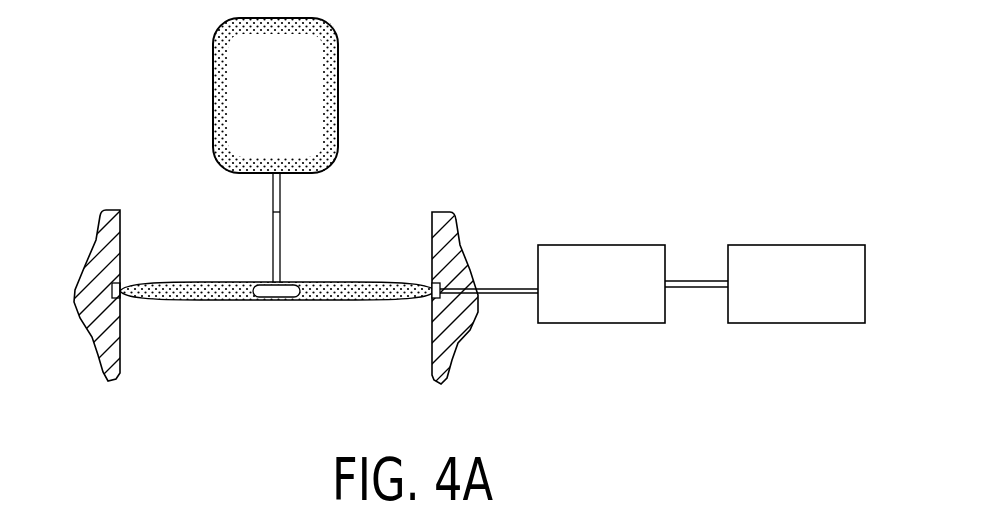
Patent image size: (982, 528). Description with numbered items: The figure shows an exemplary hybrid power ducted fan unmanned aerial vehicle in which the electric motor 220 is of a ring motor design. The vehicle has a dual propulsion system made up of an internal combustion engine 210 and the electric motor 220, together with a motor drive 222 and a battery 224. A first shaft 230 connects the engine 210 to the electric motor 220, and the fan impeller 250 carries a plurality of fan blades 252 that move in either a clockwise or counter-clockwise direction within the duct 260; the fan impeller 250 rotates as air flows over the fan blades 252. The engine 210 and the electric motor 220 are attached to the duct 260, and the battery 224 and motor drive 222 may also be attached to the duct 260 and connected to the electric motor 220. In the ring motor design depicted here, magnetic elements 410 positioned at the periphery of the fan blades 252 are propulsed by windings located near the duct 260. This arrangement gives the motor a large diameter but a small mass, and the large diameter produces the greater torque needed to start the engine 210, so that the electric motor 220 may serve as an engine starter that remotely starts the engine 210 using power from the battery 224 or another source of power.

The internal combustion engine 210 is at (294, 110).
The first shaft 230 is at (280, 212).
The fan blades 252 is at (193, 282).
The fan impeller 250 is at (278, 300).
The duct 260 is at (103, 223).
The electric motor 220 is at (464, 255).
The magnetic elements 410 is at (440, 297).
The motor drive 222 is at (619, 302).
The battery 224 is at (814, 302).